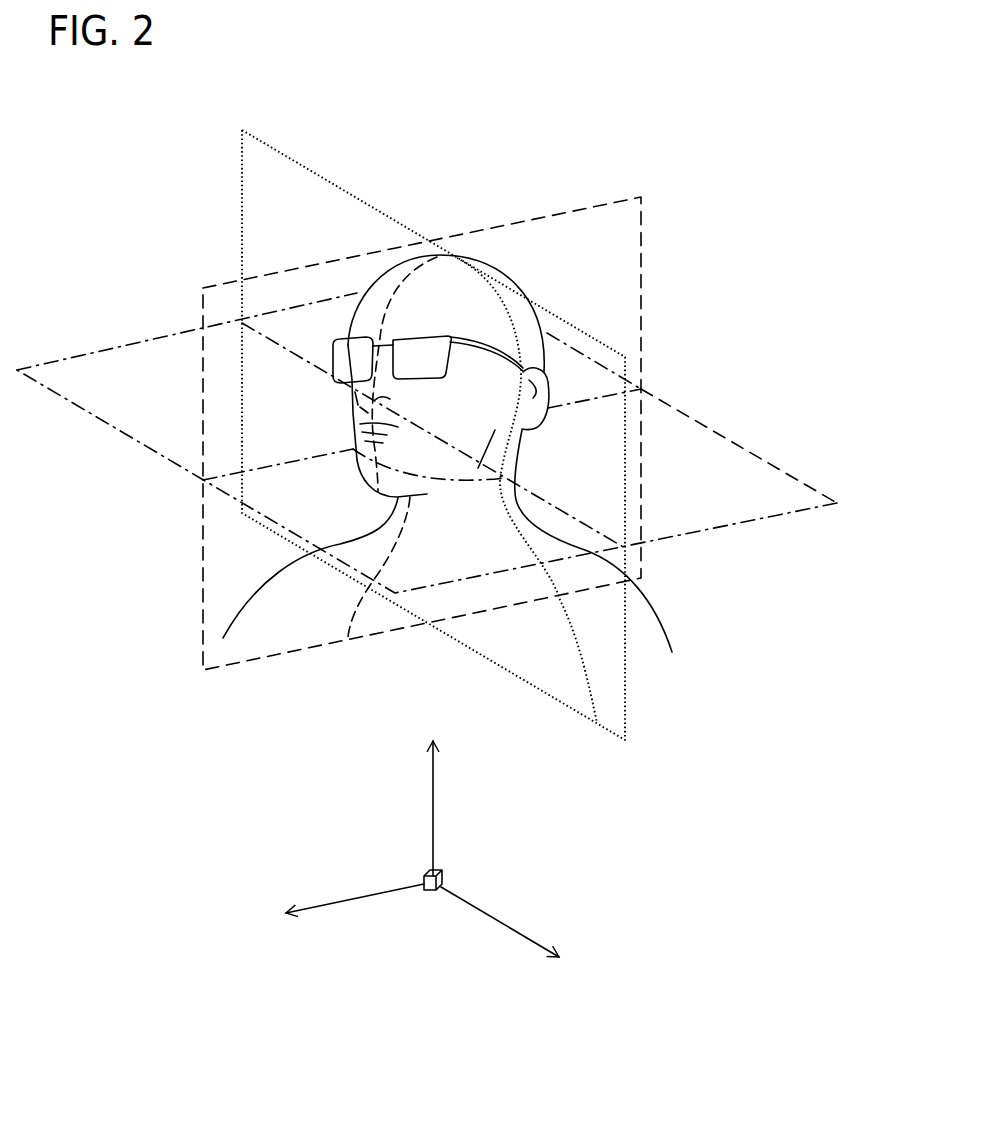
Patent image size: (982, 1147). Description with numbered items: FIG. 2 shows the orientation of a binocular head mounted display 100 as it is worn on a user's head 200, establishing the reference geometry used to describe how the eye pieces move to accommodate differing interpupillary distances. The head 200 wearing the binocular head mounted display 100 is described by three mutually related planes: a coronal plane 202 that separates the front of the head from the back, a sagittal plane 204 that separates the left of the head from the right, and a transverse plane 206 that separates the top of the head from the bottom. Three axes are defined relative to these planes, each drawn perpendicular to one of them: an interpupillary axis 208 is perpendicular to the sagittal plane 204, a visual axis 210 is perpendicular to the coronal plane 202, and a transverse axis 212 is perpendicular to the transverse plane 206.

The binocular head mounted display 100 is at (413, 355).
The head 200 is at (461, 300).
The coronal plane 202 is at (310, 223).
The sagittal plane 204 is at (618, 278).
The transverse plane 206 is at (693, 514).
The interpupillary axis 208 is at (527, 922).
The visual axis 210 is at (343, 886).
The transverse axis 212 is at (444, 792).